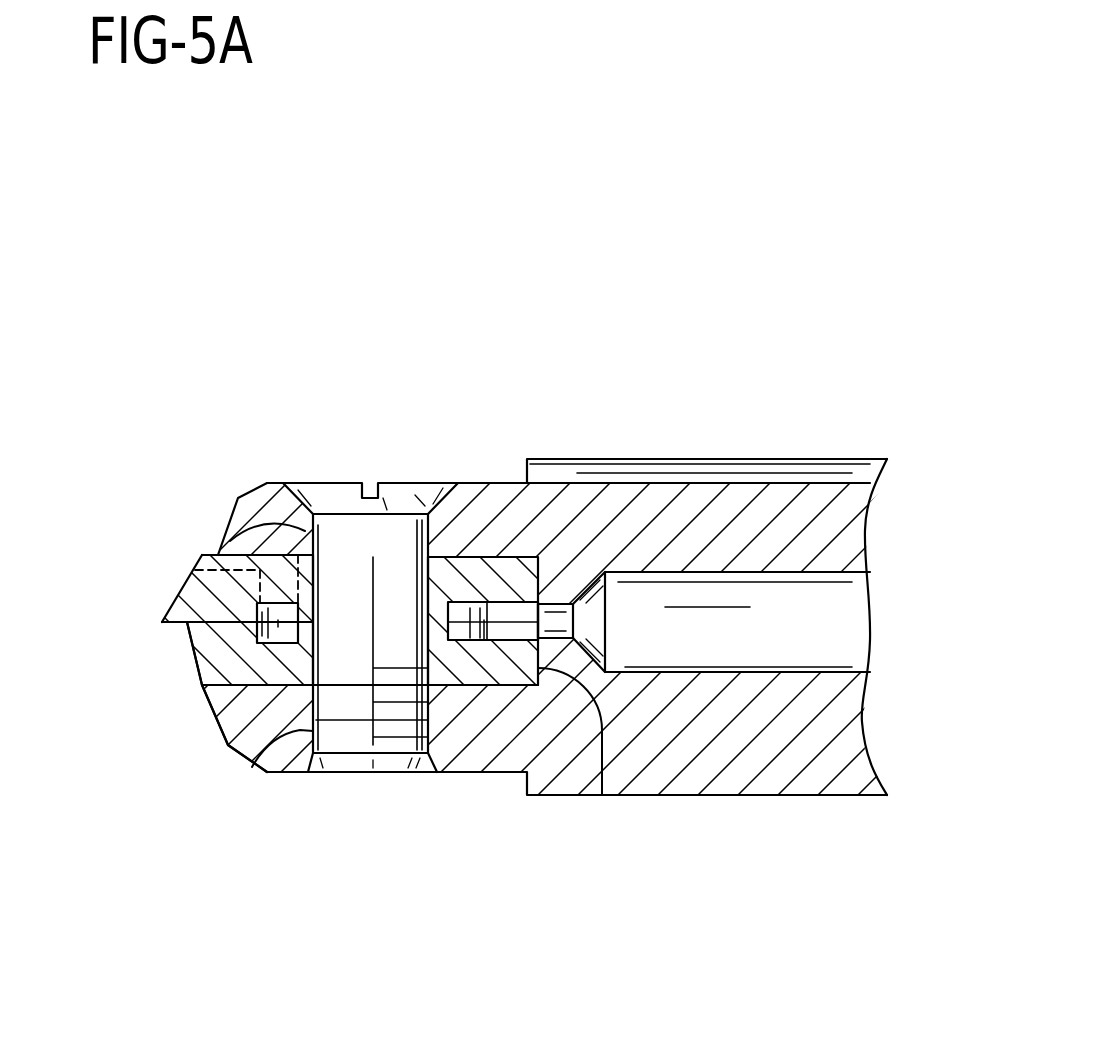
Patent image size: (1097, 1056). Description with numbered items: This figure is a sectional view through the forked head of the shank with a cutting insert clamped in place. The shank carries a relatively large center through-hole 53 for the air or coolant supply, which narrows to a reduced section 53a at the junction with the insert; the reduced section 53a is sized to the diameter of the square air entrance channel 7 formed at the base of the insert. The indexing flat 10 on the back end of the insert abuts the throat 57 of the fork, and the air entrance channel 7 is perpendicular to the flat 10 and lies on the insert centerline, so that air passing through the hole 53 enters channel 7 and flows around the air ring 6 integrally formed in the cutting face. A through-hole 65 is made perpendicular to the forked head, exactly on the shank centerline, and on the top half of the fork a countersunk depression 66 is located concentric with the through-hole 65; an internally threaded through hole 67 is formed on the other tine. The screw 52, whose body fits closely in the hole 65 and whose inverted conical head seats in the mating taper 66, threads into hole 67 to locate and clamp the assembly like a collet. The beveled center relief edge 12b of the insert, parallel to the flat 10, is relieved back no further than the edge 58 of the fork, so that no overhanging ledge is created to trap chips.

The screw 52 is at (330, 496).
The air entrance channel 7 is at (505, 612).
The throat of the fork 57 is at (530, 566).
The reduced section 53a is at (557, 602).
The center through-hole 53 is at (668, 585).
The countersunk depression 66 is at (238, 497).
The through-hole 65 is at (218, 540).
The center relief edge 12b is at (202, 672).
The air ring 6 is at (203, 673).
The edge of fork 58 is at (208, 685).
The internally threaded through hole 67 is at (252, 767).
The indexing flat 10 is at (602, 795).